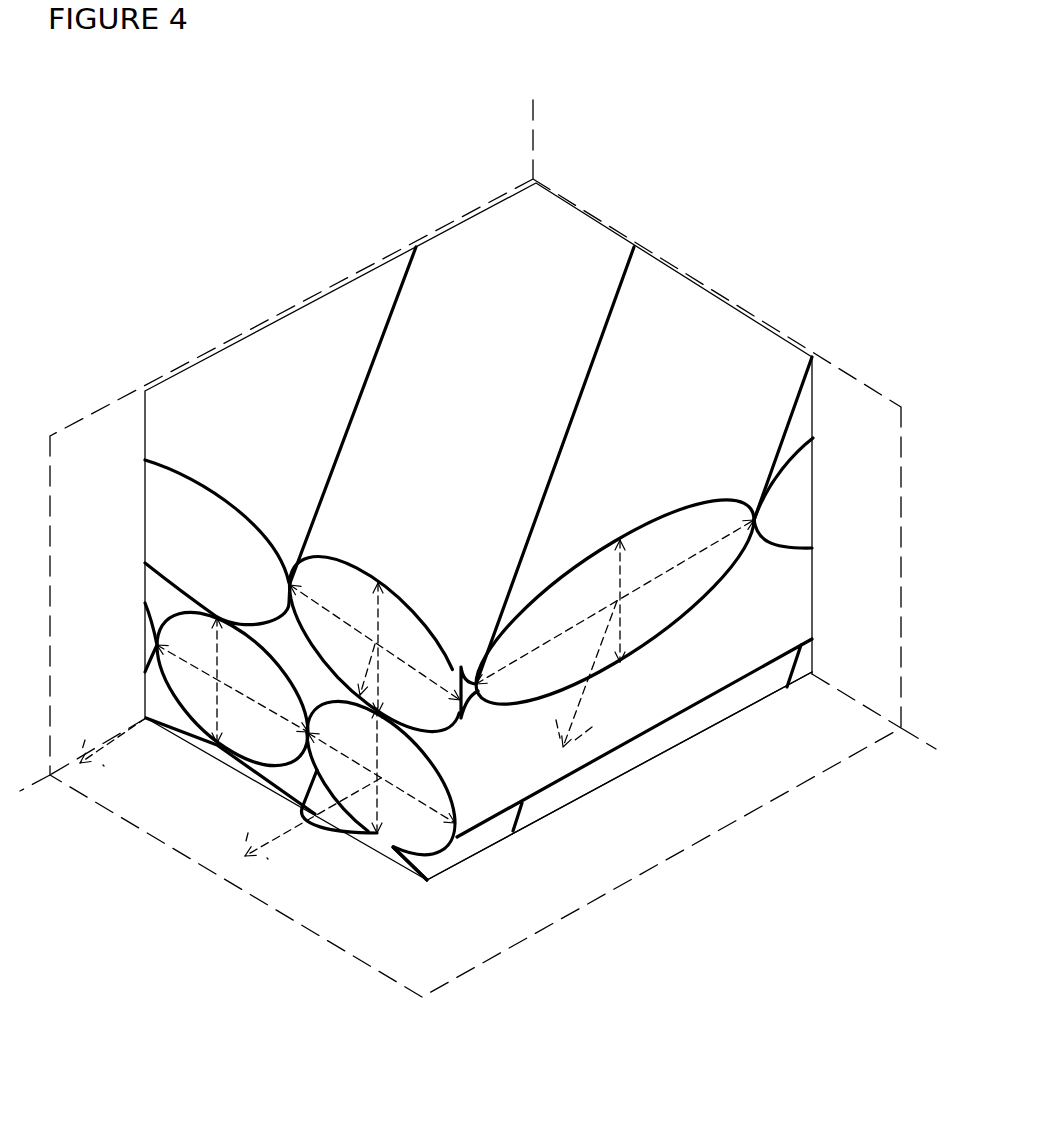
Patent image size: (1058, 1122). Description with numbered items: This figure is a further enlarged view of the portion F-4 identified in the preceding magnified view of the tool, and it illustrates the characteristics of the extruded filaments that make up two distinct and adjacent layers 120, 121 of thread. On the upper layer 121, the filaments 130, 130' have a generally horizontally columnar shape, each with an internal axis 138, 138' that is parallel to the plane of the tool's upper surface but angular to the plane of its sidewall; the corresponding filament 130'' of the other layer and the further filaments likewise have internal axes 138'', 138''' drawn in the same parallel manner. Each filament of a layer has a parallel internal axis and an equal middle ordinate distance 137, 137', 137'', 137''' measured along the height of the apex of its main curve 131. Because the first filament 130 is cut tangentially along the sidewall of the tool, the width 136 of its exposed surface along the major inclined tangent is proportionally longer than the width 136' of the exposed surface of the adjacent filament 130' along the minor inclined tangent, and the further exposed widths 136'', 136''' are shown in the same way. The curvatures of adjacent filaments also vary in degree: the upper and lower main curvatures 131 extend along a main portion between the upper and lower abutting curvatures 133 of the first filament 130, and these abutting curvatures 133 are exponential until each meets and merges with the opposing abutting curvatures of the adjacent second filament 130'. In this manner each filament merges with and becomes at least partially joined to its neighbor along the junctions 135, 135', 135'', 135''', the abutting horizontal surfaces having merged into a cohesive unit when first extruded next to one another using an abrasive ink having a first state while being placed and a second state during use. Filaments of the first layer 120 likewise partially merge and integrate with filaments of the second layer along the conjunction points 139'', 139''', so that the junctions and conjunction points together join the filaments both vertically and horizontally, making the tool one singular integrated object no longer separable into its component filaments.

The portion F-4 is at (573, 196).
The layer 120 is at (135, 517).
The upper layer 121 is at (135, 650).
The first filament 130 is at (579, 465).
The second filament 130' is at (394, 415).
The filament 130'' is at (602, 618).
The main curvature 131 is at (576, 557).
The abutting curvature 133 is at (490, 684).
The junction 135 is at (479, 551).
The junction 135' is at (262, 569).
The junction 135'' is at (321, 796).
The junction 135''' is at (152, 631).
The width of exposed surface 136 is at (615, 602).
The width of exposed surface 136' is at (374, 644).
The width of exposed surface 136'' is at (381, 777).
The width of exposed surface 136''' is at (232, 689).
The middle ordinate distance 137 is at (596, 601).
The middle ordinate distance 137' is at (404, 648).
The middle ordinate distance 137'' is at (402, 770).
The middle ordinate distance 137''' is at (251, 680).
The internal axis 138 is at (609, 674).
The internal axis 138' is at (348, 669).
The internal axis 138'' is at (313, 834).
The internal axis 138''' is at (113, 732).
The conjunction point 139'' is at (399, 873).
The conjunction point 139''' is at (230, 681).